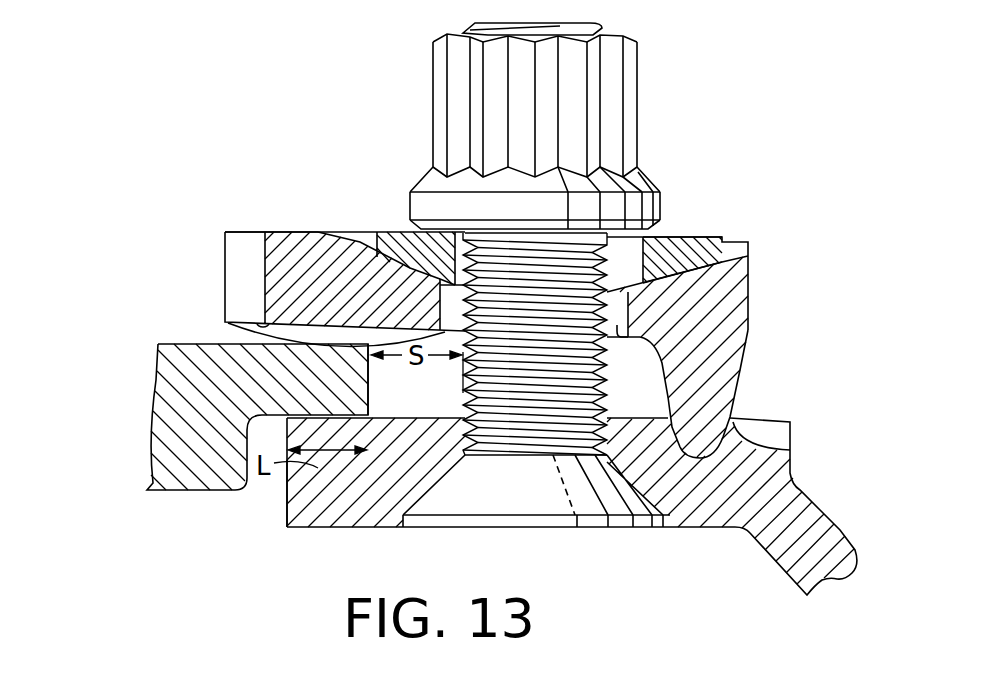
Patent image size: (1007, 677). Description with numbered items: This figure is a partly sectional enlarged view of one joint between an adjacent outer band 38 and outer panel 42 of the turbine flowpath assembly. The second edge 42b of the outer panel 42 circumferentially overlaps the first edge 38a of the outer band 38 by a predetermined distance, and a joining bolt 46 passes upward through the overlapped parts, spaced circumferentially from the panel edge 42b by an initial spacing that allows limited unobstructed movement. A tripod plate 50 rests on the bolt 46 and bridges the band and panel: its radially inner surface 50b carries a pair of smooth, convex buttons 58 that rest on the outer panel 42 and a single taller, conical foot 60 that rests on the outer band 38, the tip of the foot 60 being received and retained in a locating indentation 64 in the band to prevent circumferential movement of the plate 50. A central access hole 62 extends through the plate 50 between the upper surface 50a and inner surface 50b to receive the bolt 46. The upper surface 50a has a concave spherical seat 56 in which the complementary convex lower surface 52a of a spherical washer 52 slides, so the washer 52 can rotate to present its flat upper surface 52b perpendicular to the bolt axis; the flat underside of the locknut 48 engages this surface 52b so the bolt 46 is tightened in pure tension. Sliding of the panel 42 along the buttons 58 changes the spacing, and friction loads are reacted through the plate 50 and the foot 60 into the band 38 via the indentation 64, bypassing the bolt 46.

The outer band 38 is at (757, 550).
The first edge 38a is at (287, 502).
The outer panel 42 is at (150, 438).
The second edge 42b is at (375, 395).
The joining bolt 46 is at (466, 500).
The locknut 48 is at (640, 62).
The tripod plate 50 is at (752, 288).
The upper surface 50a is at (297, 232).
The inner surface 50b is at (260, 323).
The spherical washer 52 is at (712, 228).
The washer lower surface 52a is at (690, 263).
The washer upper surface 52b is at (680, 237).
The spherical seat 56 is at (352, 237).
The buttons 58 is at (312, 342).
The foot 60 is at (736, 372).
The access hole 62 is at (617, 340).
The locating indentation 64 is at (790, 450).